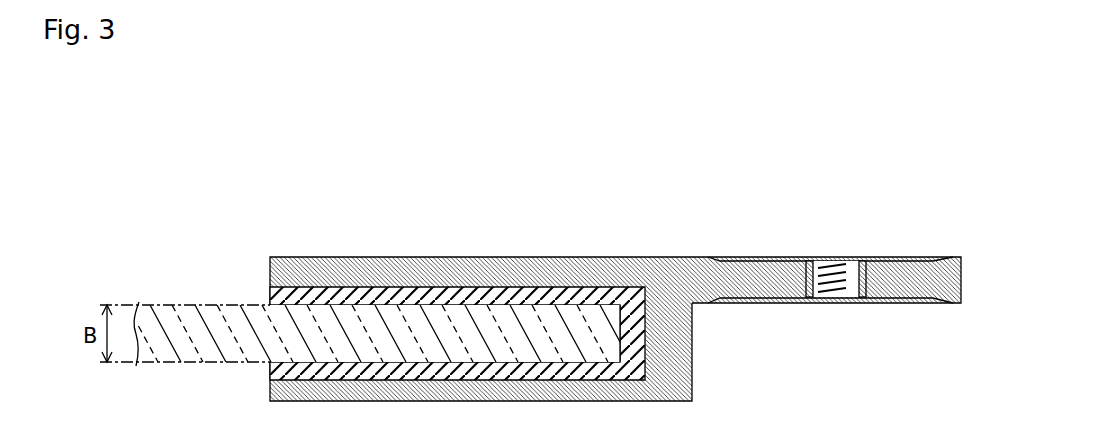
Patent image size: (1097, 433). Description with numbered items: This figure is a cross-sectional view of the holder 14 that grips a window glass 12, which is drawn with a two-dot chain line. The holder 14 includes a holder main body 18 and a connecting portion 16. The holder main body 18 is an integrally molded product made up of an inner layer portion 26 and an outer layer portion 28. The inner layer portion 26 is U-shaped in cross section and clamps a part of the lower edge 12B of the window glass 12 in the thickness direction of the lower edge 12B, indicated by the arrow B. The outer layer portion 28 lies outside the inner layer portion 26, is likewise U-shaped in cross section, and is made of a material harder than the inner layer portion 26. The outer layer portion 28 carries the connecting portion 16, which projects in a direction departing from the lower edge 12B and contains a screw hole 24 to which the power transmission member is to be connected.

The window glass 12 is at (189, 300).
The lower edge 12B is at (622, 342).
The holder 14 is at (615, 264).
The connecting portion 16 is at (913, 258).
The holder main body 18 is at (648, 252).
The screw hole 24 is at (851, 282).
The inner layer portion 26 is at (412, 287).
The outer layer portion 28 is at (553, 262).